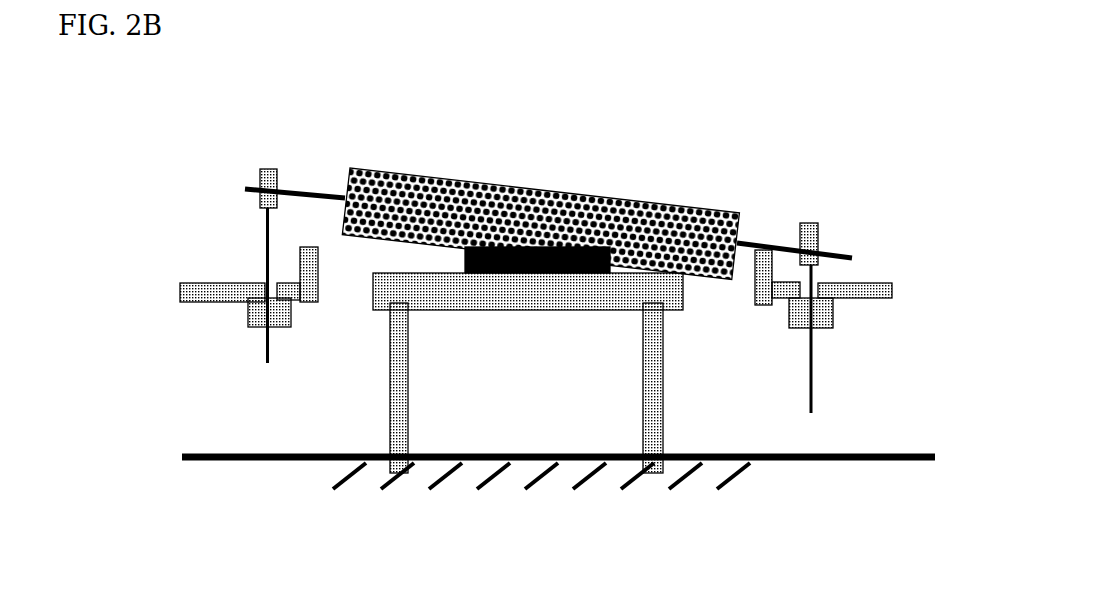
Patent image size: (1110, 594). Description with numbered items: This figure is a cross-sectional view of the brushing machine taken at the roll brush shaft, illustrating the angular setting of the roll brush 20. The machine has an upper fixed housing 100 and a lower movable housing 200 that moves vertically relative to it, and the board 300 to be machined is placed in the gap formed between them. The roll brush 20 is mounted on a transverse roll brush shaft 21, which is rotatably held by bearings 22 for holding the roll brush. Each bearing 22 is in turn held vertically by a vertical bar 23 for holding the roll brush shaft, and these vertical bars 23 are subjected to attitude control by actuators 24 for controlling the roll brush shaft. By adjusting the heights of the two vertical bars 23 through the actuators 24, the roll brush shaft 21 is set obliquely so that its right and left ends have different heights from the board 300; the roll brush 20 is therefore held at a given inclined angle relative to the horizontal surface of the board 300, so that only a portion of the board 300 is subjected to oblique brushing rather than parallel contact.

The roll brush 20 is at (541, 187).
The roll brush shaft 21 is at (794, 212).
The bearing for holding roll brush 22 is at (297, 150).
The vertical bar for holding roll brush shaft 23 is at (237, 385).
The actuator for controlling roll brush shaft 24 is at (374, 437).
The upper fixed housing 100 is at (795, 348).
The lower movable housing 200 is at (528, 373).
The board 300 is at (526, 297).